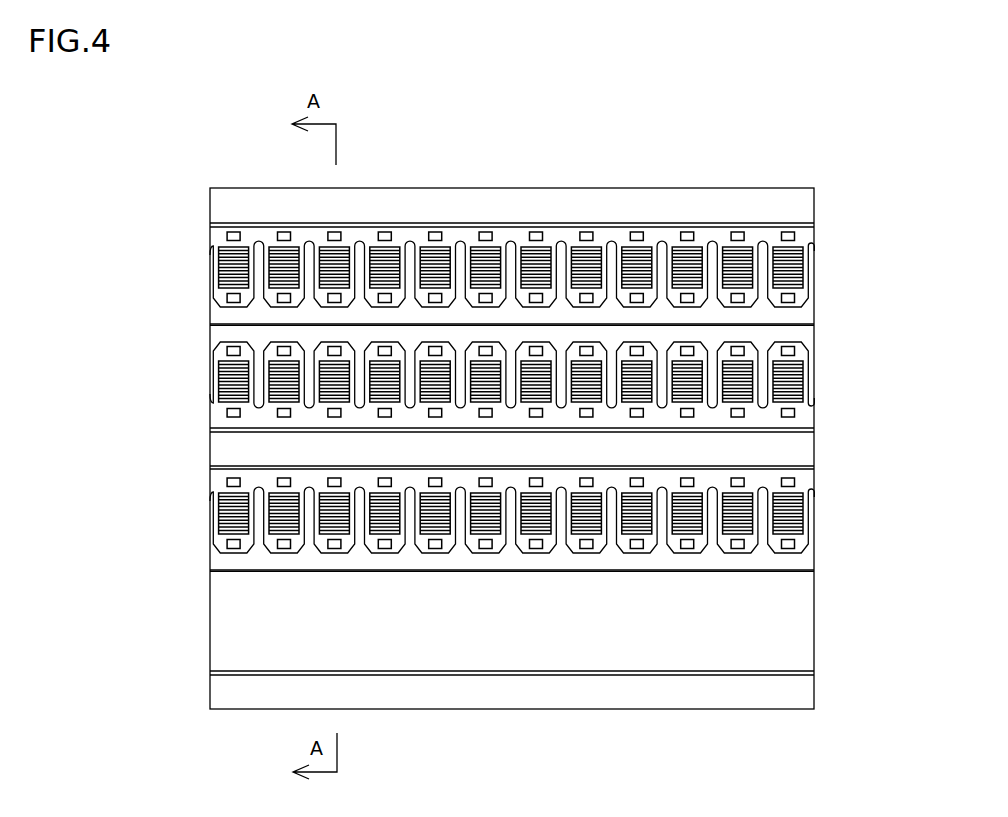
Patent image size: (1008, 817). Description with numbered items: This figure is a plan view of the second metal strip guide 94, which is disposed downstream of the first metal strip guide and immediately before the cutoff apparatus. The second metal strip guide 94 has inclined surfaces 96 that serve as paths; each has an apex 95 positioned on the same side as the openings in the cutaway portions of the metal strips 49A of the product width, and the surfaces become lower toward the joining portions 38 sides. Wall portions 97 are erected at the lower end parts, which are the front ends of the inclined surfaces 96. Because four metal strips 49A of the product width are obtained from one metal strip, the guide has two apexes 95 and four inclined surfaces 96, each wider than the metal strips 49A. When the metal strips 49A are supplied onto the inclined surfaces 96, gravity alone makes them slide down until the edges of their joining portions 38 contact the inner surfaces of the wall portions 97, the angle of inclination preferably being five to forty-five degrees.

The second metal strip guide 94 is at (206, 176).
The wall portions 97 is at (221, 227).
The inclined surfaces 96 is at (220, 316).
The apex 95 is at (803, 322).
The metal strips of the product width 49A is at (827, 273).
The joining portions 38 is at (805, 232).